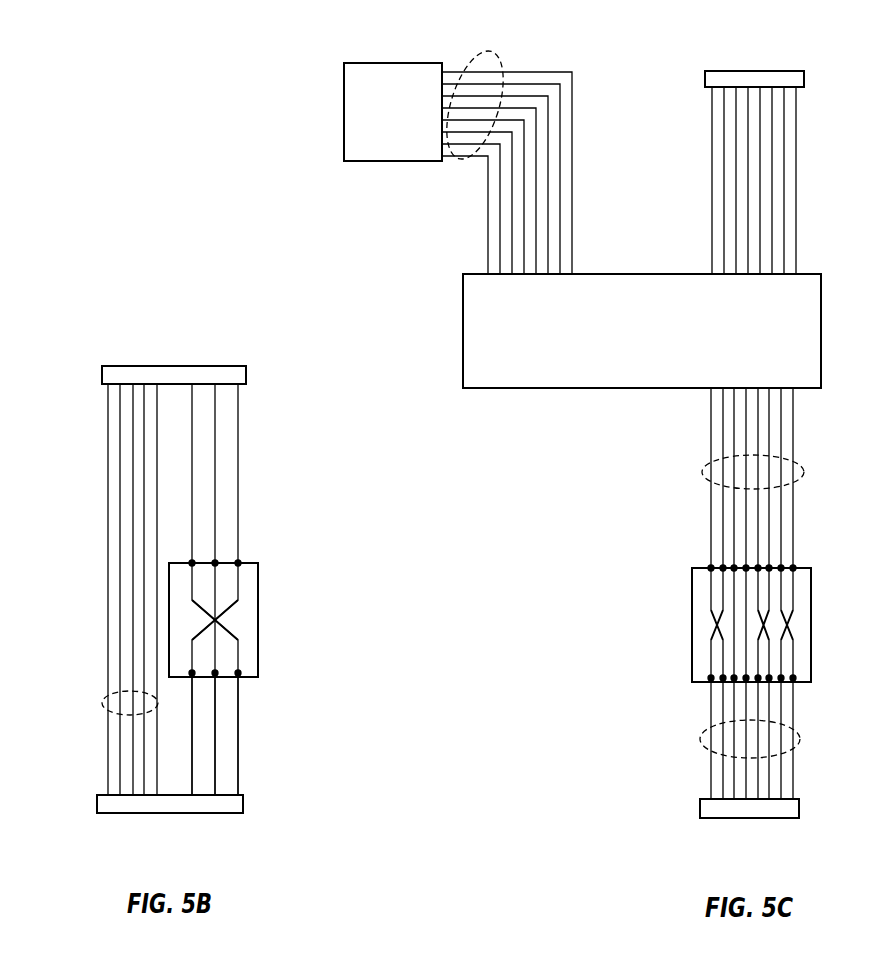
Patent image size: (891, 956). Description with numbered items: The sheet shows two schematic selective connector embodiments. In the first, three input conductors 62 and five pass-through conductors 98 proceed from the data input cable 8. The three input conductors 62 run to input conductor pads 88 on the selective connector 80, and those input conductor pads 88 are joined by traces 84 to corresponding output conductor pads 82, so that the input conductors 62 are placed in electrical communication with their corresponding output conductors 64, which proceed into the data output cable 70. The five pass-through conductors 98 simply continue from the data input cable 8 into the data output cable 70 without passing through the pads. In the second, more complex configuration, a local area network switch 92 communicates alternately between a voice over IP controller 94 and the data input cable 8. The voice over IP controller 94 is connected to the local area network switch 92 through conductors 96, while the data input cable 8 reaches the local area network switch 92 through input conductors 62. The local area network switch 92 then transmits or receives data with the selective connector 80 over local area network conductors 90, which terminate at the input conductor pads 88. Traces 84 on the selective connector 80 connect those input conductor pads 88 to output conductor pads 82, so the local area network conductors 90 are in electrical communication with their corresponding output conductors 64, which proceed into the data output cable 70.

In FIG. 5B, the data input cable 8 is at (198, 366).
In FIG. 5C, the data input cable 8 is at (755, 71).
In FIG. 5B, the input conductors 62 is at (240, 452).
In FIG. 5C, the input conductors 62 is at (797, 175).
In FIG. 5B, the output conductors 64 is at (238, 697).
In FIG. 5C, the output conductors 64 is at (800, 739).
In FIG. 5B, the data output cable 70 is at (192, 813).
In FIG. 5C, the data output cable 70 is at (748, 818).
In FIG. 5B, the selective connector 80 is at (258, 625).
In FIG. 5C, the selective connector 80 is at (811, 632).
In FIG. 5B, the output conductor pads 82 is at (238, 675).
In FIG. 5C, the output conductor pads 82 is at (709, 678).
In FIG. 5B, the traces 84 is at (236, 588).
In FIG. 5C, the traces 84 is at (710, 606).
In FIG. 5B, the input conductor pads 88 is at (238, 563).
In FIG. 5C, the input conductor pads 88 is at (709, 568).
In FIG. 5C, the local area network conductors 90 is at (804, 472).
In FIG. 5C, the local area network switch 92 is at (821, 332).
In FIG. 5C, the voice over IP controller 94 is at (392, 63).
In FIG. 5C, the conductors 96 is at (490, 60).
In FIG. 5B, the pass-through conductors 98 is at (102, 702).